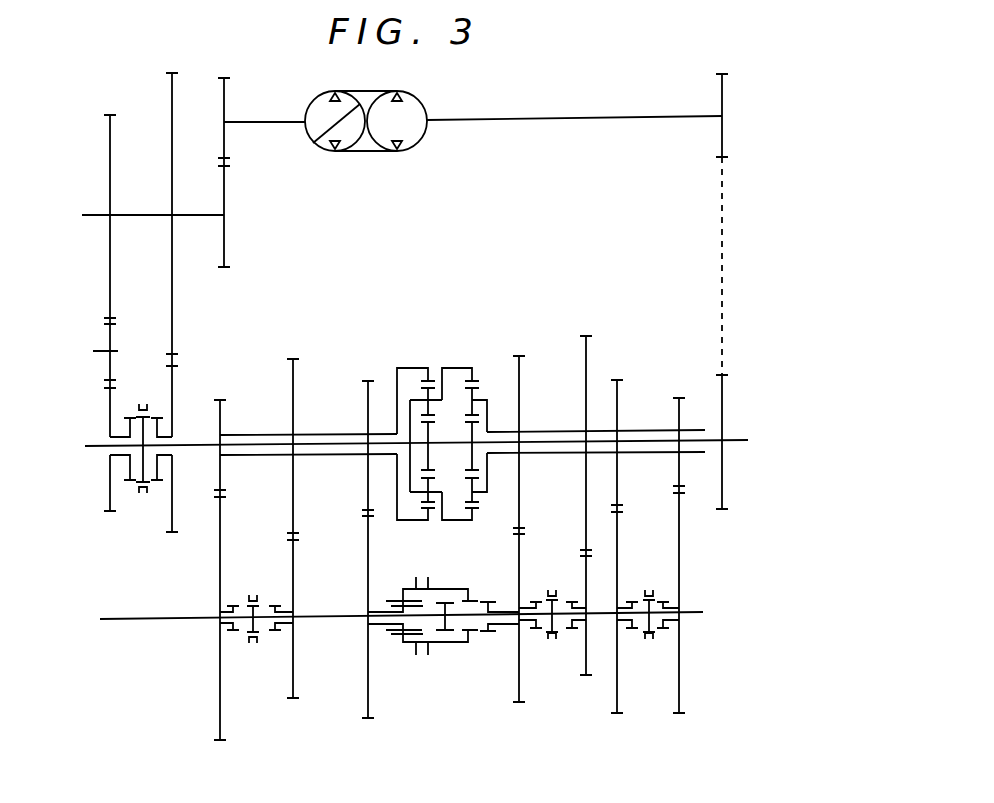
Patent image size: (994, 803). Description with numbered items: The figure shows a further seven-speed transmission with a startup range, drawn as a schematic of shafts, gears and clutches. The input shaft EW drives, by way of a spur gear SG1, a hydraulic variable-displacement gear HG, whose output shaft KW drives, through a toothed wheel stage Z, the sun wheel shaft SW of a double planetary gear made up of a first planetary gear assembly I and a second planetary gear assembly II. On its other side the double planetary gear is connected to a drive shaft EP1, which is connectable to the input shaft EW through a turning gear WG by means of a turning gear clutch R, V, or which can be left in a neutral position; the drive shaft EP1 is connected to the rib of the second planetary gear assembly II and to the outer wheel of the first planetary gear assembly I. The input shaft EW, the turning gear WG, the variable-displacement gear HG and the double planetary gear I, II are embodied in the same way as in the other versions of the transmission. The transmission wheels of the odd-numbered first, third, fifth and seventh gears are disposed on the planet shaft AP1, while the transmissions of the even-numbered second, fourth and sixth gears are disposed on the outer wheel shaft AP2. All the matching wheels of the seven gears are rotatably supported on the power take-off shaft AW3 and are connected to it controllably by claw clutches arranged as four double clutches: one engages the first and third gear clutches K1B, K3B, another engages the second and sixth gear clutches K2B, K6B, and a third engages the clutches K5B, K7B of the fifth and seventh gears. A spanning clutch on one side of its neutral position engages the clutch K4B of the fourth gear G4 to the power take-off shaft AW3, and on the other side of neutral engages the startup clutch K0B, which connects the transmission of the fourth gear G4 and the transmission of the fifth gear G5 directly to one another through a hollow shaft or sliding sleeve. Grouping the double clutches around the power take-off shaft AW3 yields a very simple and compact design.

The input shaft EW is at (105, 215).
The spur gear SG1 is at (226, 185).
The hydraulic variable-displacement gear HG is at (370, 151).
The output shaft KW is at (495, 122).
The toothed wheel stage Z is at (727, 322).
The sun wheel shaft SW is at (747, 441).
The power take-off shaft AW3 is at (703, 611).
The turning gear WG is at (144, 437).
The turning gear clutch R is at (131, 484).
The turning gear clutch V is at (160, 484).
The drive shaft EP1 is at (186, 444).
The outer wheel shaft AP2 is at (252, 435).
The 4th gear G4 is at (365, 408).
The second planetary gear assembly II is at (421, 366).
The first planetary gear assembly I is at (471, 366).
The 5th gear G5 is at (521, 378).
The planet shaft AP1 is at (563, 430).
The 2nd gear clutch K2B is at (237, 607).
The 6th gear clutch K6B is at (275, 633).
The 4th gear clutch K4B is at (445, 642).
The startup clutch K0B is at (495, 632).
The 7th gear clutch K7B is at (570, 602).
The 5th gear clutch K5B is at (536, 631).
The 3rd gear clutch K3B is at (631, 602).
The 1st gear clutch K1B is at (663, 631).